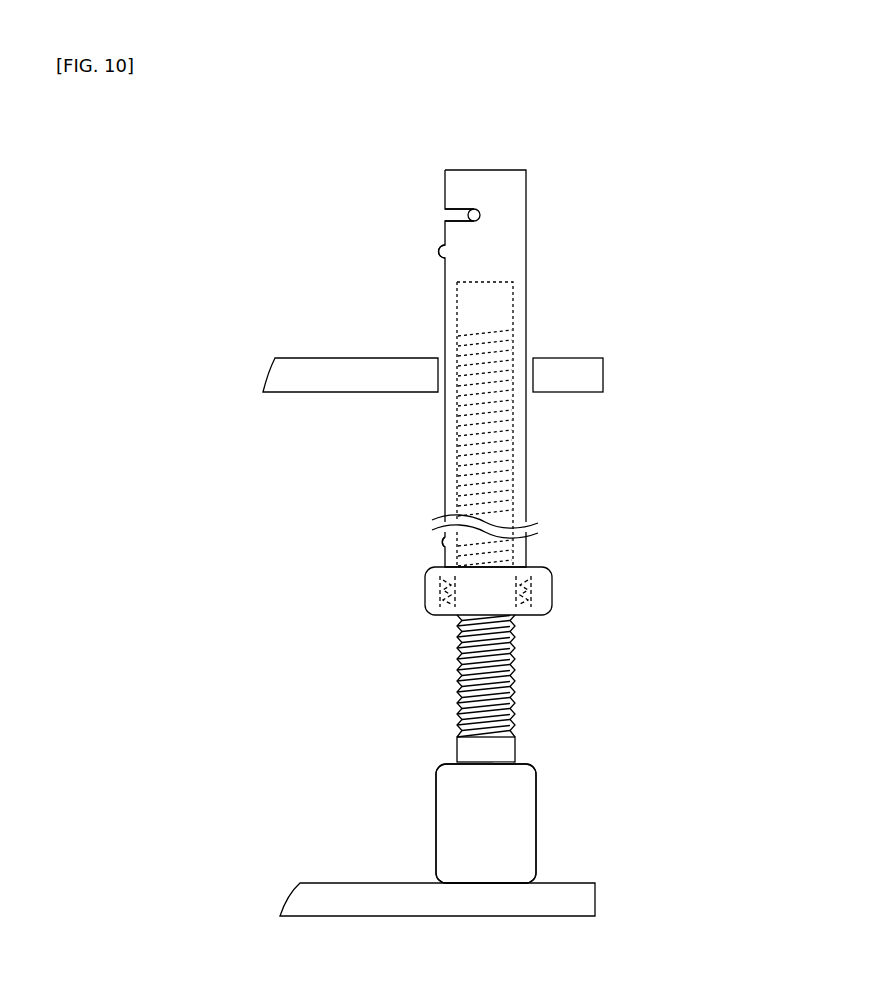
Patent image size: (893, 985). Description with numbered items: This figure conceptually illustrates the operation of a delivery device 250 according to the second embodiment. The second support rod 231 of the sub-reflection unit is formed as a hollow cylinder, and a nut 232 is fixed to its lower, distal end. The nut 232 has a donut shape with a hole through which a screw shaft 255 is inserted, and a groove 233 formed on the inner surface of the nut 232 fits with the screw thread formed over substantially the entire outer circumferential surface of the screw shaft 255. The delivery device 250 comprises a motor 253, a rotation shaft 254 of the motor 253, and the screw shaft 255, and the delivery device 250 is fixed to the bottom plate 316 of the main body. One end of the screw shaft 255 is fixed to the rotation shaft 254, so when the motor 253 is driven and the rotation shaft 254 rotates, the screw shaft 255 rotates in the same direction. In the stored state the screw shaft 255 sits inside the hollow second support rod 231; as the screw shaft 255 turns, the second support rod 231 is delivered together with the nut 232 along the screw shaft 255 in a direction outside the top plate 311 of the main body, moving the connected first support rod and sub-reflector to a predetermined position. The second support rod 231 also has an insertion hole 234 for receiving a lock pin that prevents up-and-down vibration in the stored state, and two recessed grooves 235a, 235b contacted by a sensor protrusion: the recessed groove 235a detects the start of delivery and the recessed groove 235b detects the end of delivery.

The second support rod 231 is at (526, 455).
The nut 232 is at (552, 590).
The groove 233 is at (447, 592).
The insertion hole 234 is at (480, 215).
The recessed groove 235a is at (445, 250).
The recessed groove 235b is at (445, 541).
The delivery device 250 is at (510, 848).
The motor 253 is at (537, 803).
The rotation shaft 254 is at (517, 762).
The screw shaft 255 is at (515, 676).
The top plate 311 is at (265, 388).
The bottom plate 316 is at (282, 900).